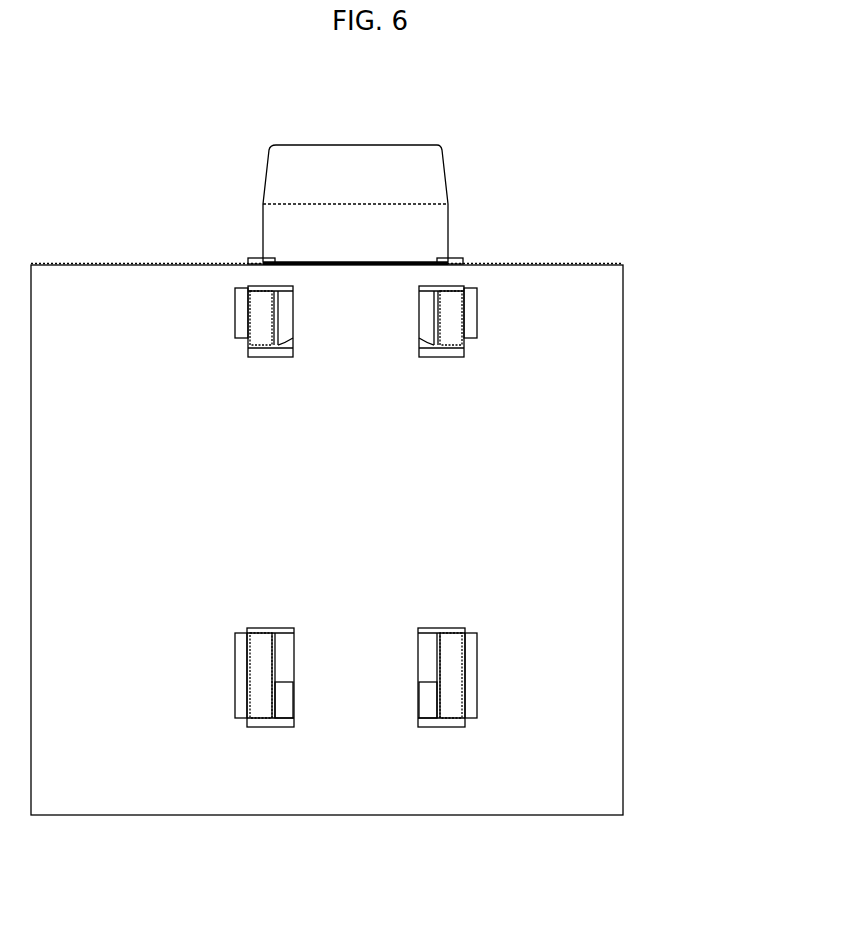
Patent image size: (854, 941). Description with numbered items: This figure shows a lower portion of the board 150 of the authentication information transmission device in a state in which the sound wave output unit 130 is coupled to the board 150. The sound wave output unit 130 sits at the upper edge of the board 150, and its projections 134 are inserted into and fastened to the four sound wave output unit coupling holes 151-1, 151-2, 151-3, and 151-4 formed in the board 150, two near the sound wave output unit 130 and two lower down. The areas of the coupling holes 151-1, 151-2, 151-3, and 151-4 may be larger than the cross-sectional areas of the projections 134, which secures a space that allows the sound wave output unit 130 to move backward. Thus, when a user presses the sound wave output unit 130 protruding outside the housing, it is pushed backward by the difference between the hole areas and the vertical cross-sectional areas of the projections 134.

The sound wave output unit 130 is at (360, 160).
The projections 134 is at (470, 313).
The board 150 is at (623, 410).
The sound wave output unit coupling hole 151-1 is at (262, 285).
The sound wave output unit coupling hole 151-2 is at (450, 285).
The sound wave output unit coupling hole 151-3 is at (271, 728).
The sound wave output unit coupling hole 151-4 is at (440, 728).